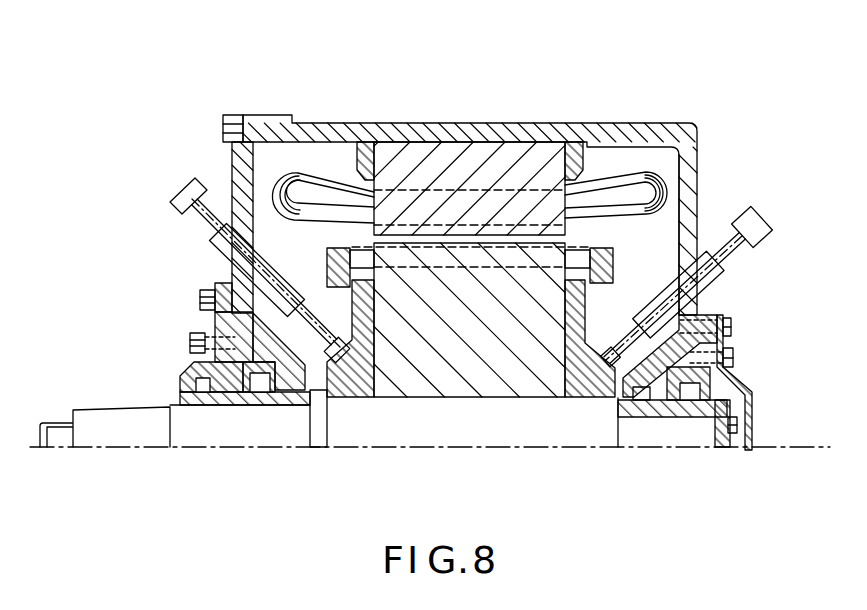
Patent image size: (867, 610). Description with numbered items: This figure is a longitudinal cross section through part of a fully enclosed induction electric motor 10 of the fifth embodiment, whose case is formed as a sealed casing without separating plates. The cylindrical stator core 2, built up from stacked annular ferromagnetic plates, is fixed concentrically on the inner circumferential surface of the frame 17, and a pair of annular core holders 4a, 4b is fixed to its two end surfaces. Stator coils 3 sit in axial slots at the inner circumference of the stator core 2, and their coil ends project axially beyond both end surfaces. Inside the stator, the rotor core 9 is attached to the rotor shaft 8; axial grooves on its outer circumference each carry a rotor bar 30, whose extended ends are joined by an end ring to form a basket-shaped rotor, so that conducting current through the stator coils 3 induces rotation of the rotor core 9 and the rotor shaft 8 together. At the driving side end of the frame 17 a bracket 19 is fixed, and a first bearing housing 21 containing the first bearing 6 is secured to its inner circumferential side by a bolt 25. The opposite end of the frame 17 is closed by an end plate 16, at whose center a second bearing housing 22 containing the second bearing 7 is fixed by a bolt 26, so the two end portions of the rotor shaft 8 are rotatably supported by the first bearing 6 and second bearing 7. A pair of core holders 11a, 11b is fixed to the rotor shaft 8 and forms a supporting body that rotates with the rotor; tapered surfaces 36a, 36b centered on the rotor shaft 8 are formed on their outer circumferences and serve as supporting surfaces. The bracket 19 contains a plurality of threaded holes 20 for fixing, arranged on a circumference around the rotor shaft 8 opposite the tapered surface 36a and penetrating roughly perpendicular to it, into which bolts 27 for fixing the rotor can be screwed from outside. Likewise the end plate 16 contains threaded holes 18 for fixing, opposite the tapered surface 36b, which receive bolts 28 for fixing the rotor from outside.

The stator core 2 is at (527, 147).
The stator coils 3 is at (632, 150).
The core holder 4a is at (368, 150).
The core holder 4b is at (578, 147).
The first bearing 6 is at (259, 385).
The second bearing 7 is at (690, 395).
The rotor shaft 8 is at (420, 437).
The rotor core 9 is at (502, 392).
The motor 10 is at (440, 98).
The core holder 11a is at (348, 392).
The core holder 11b is at (577, 392).
The end plate 16 is at (694, 147).
The frame 17 is at (626, 180).
The threaded holes for fixing 18 is at (700, 297).
The bracket 19 is at (237, 205).
The threaded holes for fixing 20 is at (255, 238).
The first bearing housing 21 is at (222, 328).
The second bearing housing 22 is at (738, 357).
The bolt 25 is at (198, 300).
The bolt 26 is at (716, 333).
The bolts for fixing the rotor 27 is at (172, 210).
The bolts for fixing the rotor 28 is at (740, 256).
The rotor bar 30 is at (578, 252).
The tapered surface 36a is at (325, 330).
The tapered surface 36b is at (600, 340).